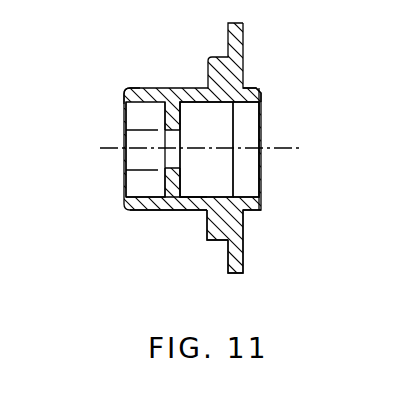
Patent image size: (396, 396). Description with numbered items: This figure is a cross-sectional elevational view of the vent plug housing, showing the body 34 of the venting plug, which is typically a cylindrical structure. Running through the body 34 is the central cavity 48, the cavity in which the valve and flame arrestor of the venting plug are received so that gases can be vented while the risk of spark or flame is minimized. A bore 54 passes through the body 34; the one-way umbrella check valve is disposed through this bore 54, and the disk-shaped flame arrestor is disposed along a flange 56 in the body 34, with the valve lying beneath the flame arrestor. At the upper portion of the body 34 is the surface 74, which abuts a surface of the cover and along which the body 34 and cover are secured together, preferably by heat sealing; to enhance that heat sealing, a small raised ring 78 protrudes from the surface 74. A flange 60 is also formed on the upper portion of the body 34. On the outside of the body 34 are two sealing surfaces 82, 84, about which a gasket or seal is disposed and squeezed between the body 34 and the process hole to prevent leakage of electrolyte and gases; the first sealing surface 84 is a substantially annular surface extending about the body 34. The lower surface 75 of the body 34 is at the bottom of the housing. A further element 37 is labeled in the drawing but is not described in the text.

The body 34 is at (185, 88).
The lower surface 75 is at (121, 100).
The bore 54 is at (168, 165).
The end wall 37 is at (150, 212).
The central cavity 48 is at (203, 191).
The flange 56 is at (229, 196).
The flange 60 is at (262, 90).
The raised ring 78 is at (246, 221).
The surface 74 is at (243, 240).
The sealing surface 82 is at (228, 262).
The first sealing surface 84 is at (207, 246).